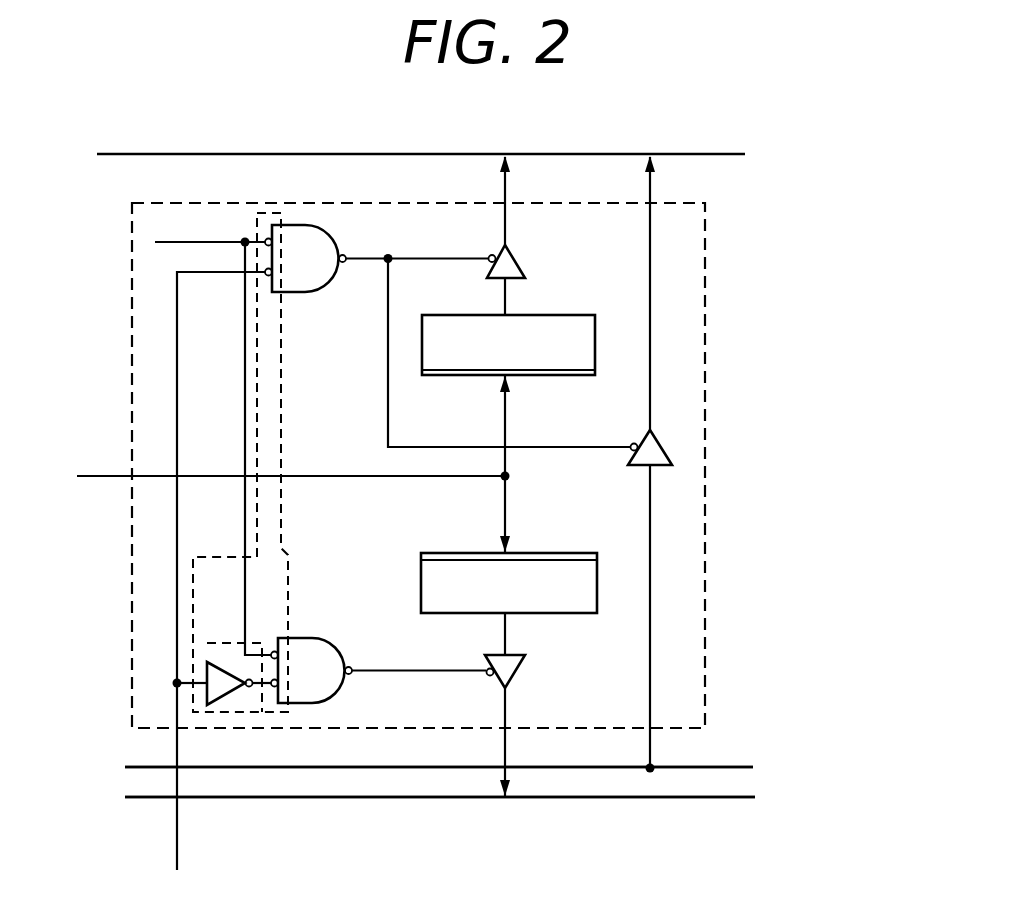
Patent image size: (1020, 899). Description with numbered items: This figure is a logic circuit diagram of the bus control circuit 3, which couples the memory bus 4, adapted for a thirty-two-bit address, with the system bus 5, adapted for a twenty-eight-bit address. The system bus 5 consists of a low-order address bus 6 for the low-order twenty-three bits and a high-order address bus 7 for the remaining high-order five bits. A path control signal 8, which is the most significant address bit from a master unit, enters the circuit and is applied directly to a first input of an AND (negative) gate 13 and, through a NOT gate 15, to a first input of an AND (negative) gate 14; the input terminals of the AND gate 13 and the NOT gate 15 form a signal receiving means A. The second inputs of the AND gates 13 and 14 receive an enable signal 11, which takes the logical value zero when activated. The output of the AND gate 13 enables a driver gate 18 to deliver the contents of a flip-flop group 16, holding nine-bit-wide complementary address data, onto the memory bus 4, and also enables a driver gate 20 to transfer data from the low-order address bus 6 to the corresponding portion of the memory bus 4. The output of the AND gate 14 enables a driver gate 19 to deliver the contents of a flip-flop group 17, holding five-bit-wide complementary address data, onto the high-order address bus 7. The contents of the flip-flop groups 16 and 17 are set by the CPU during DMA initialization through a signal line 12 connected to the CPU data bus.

The bus control circuit 3 is at (706, 253).
The memory bus 4 is at (686, 152).
The system bus 5 is at (677, 770).
The low-order address bus 6 is at (738, 767).
The high-order address bus 7 is at (733, 800).
The path control signal 8 is at (178, 848).
The enable signal 11 is at (205, 240).
The signal line 12 is at (204, 474).
The AND (negative) gate 13 is at (283, 294).
The AND (negative) gate 14 is at (312, 637).
The NOT gate 15 is at (213, 660).
The flip-flop group 16 is at (574, 377).
The flip-flop group 17 is at (573, 553).
The driver gate 18 is at (519, 267).
The driver gate 19 is at (519, 676).
The driver gate 20 is at (665, 455).
The signal receiving means A is at (255, 364).